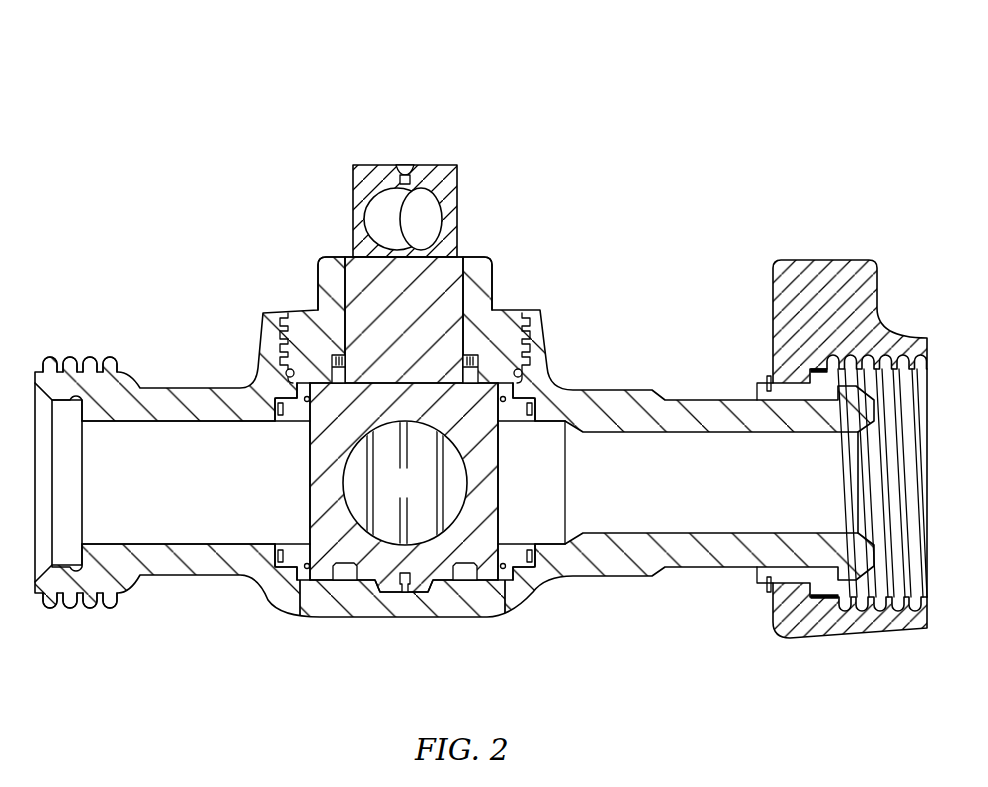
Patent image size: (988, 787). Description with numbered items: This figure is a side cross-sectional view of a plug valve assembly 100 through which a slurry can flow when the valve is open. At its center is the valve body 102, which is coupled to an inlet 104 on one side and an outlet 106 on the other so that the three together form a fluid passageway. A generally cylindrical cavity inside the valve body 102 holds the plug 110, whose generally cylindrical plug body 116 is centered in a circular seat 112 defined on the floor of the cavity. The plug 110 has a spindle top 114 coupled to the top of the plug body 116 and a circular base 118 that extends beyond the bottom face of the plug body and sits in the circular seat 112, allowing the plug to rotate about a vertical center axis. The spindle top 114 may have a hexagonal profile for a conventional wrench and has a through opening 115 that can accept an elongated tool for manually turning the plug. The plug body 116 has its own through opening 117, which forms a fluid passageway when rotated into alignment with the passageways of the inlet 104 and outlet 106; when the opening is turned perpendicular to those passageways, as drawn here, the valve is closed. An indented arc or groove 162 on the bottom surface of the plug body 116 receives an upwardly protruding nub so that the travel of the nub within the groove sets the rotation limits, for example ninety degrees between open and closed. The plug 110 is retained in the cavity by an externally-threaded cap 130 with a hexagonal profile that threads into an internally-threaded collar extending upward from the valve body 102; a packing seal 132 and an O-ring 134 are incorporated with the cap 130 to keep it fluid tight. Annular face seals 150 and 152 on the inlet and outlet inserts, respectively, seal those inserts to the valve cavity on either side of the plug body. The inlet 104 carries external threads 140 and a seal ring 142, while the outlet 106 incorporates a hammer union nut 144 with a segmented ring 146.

The plug valve assembly 100 is at (128, 50).
The valve body 102 is at (522, 315).
The inlet 104 is at (88, 324).
The outlet 106 is at (776, 708).
The plug 110 is at (355, 265).
The circular seat 112 is at (417, 617).
The spindle top 114 is at (450, 186).
The through opening 115 is at (392, 202).
The plug body 116 is at (500, 504).
The through opening 117 is at (421, 497).
The circular base 118 is at (382, 592).
The cap 130 is at (482, 270).
The packing seal 132 is at (478, 365).
The O-ring 134 is at (522, 375).
The external threads 140 is at (108, 606).
The seal ring 142 is at (43, 598).
The hammer union nut 144 is at (825, 258).
The segmented ring 146 is at (769, 585).
The annular face seal 150 is at (275, 565).
The annular face seal 152 is at (540, 580).
The groove 162 is at (463, 572).